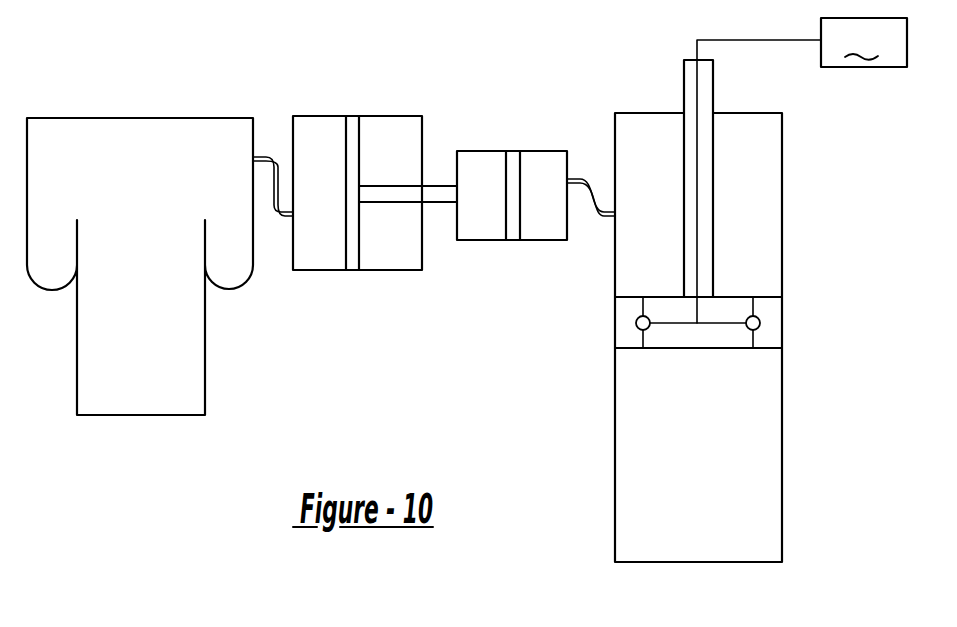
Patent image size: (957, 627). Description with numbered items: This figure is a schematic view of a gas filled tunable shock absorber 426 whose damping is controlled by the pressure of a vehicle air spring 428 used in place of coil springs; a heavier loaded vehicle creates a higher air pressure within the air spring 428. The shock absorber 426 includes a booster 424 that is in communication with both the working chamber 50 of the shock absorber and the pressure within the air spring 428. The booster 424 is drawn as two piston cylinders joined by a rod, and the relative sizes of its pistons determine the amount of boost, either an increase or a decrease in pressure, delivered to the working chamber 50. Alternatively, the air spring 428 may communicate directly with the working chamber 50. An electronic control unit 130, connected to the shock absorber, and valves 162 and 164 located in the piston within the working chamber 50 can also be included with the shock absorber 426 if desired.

The working chamber 50 is at (751, 229).
The electronic control unit 130 is at (802, 42).
The valve 162 is at (636, 323).
The valve 164 is at (760, 323).
The booster 424 is at (461, 265).
The tunable shock absorber 426 is at (560, 69).
The air spring 428 is at (205, 363).